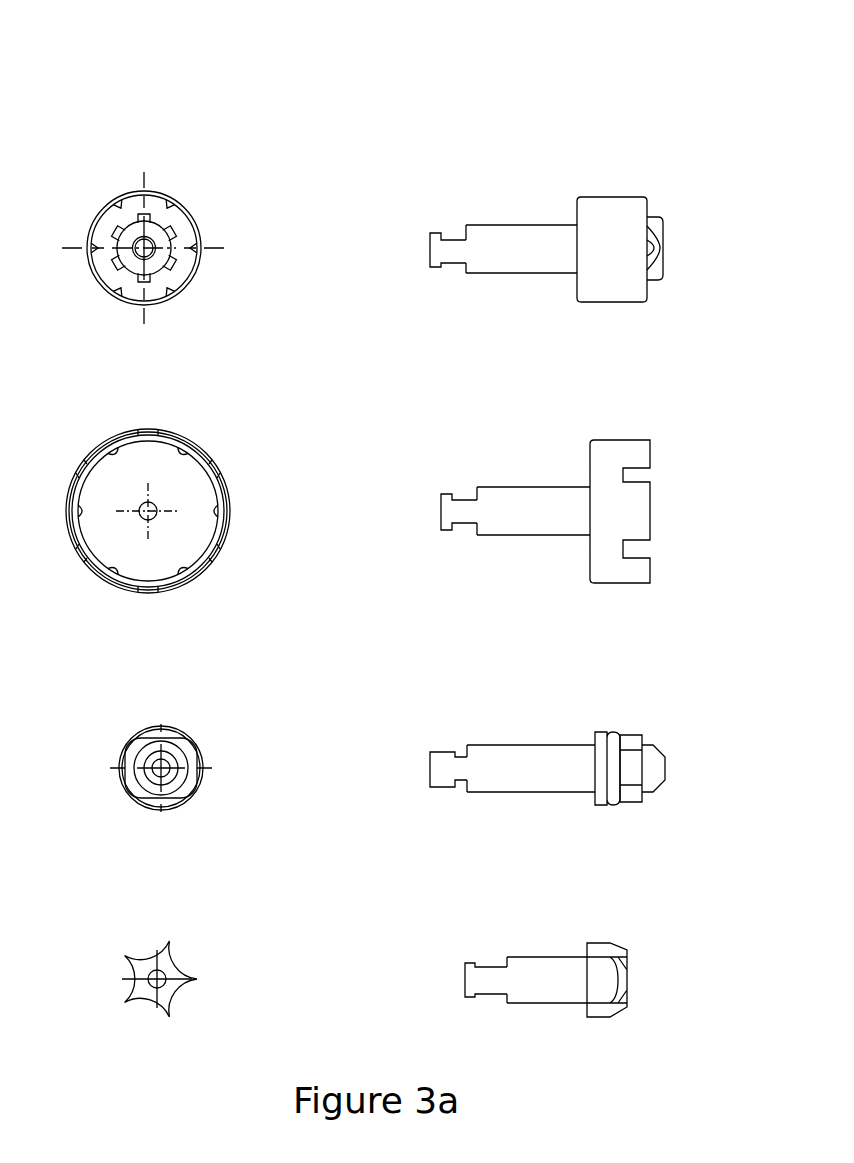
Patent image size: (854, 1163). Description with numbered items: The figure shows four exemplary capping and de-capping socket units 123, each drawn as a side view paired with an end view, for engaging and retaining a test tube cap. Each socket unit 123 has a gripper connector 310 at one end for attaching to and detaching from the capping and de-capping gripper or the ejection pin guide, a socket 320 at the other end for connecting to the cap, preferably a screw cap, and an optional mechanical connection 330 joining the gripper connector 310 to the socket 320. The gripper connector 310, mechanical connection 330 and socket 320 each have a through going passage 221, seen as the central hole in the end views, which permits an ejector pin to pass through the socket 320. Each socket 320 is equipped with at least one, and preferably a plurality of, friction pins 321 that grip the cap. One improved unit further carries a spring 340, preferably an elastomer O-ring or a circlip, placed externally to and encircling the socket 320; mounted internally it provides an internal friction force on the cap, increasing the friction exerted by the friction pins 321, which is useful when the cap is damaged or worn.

The capping and de-capping socket unit 123 is at (342, 89).
The through going passage 221 is at (152, 239).
The gripper connector 310 is at (451, 234).
The socket 320 is at (207, 226).
The friction pin 321 is at (185, 263).
The mechanical connection 330 is at (515, 225).
The spring 340 is at (202, 741).